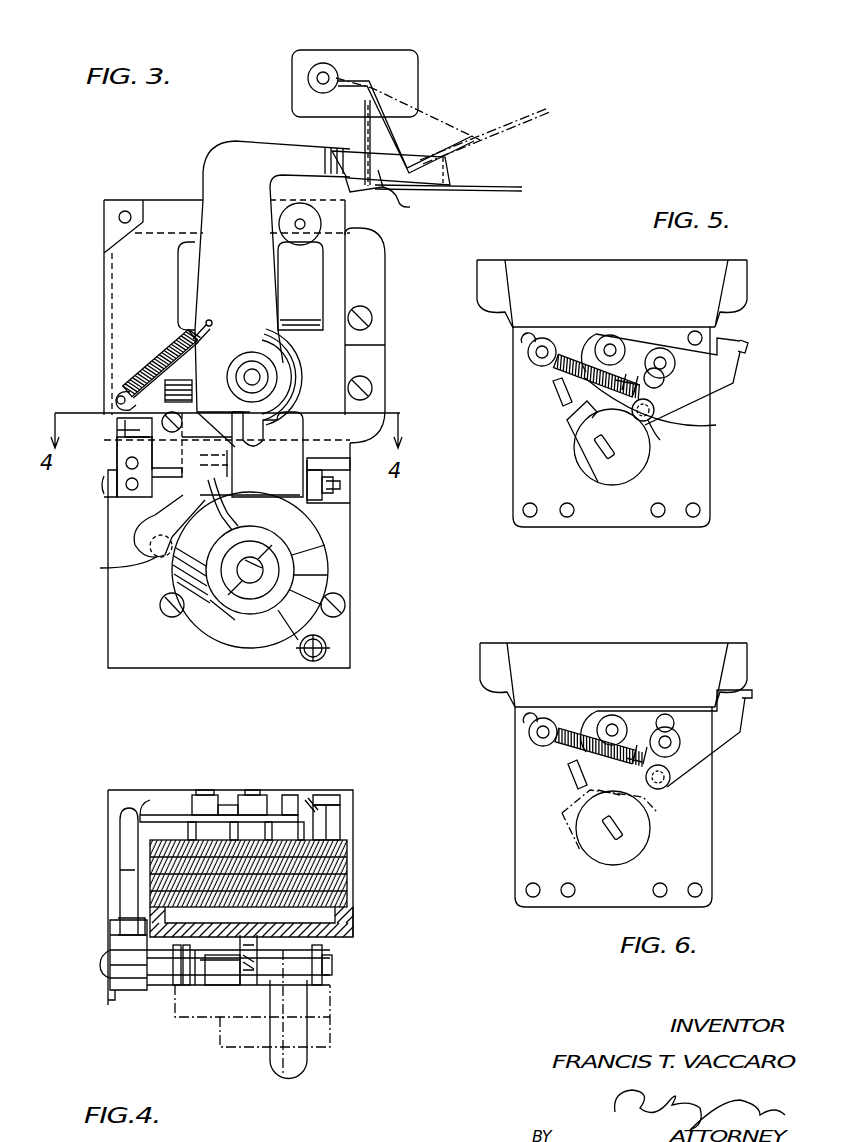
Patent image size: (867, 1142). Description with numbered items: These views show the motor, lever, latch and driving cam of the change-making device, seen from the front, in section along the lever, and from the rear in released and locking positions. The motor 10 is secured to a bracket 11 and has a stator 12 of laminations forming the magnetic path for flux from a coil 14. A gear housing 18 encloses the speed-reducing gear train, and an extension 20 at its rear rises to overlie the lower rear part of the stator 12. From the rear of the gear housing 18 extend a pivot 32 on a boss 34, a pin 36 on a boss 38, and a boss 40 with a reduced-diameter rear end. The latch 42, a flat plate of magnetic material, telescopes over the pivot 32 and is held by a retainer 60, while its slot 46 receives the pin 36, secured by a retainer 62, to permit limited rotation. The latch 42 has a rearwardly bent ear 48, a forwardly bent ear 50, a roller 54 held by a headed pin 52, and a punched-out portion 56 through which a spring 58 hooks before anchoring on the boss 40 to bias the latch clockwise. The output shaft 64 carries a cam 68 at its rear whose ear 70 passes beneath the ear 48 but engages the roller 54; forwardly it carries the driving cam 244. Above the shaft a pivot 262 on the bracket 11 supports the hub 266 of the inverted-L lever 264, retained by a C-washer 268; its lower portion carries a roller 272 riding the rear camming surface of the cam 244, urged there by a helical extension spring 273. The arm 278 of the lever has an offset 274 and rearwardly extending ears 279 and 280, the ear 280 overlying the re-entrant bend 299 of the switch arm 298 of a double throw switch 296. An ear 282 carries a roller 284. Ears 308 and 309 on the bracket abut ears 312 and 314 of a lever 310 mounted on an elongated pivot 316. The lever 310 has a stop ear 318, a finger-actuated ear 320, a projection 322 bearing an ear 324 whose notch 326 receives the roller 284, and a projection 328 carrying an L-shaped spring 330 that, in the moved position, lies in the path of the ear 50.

In FIG. 3, the motor 10 is at (422, 354).
In FIG. 5, the motor 10 is at (623, 262).
In FIG. 6, the motor 10 is at (638, 650).
In FIG. 4, the motor 10 is at (345, 912).
In FIG. 3, the bracket 11 is at (340, 226).
In FIG. 4, the bracket 11 is at (340, 938).
In FIG. 3, the stator 12 is at (385, 305).
In FIG. 5, the stator 12 is at (745, 262).
In FIG. 6, the stator 12 is at (748, 648).
In FIG. 4, the stator 12 is at (335, 862).
In FIG. 3, the coil 14 is at (308, 281).
In FIG. 5, the gear housing 18 is at (710, 470).
In FIG. 6, the gear housing 18 is at (712, 838).
In FIG. 5, the extension 20 is at (550, 289).
In FIG. 6, the extension 20 is at (550, 676).
In FIG. 5, the pivot 32 is at (614, 342).
In FIG. 6, the pivot 32 is at (650, 700).
In FIG. 4, the pivot 32 is at (262, 795).
In FIG. 4, the boss 34 is at (272, 831).
In FIG. 5, the pin 36 is at (672, 366).
In FIG. 6, the pin 36 is at (676, 735).
In FIG. 4, the pin 36 is at (190, 797).
In FIG. 4, the boss 38 is at (188, 831).
In FIG. 4, the boss 40 is at (340, 826).
In FIG. 5, the latch 42 is at (728, 388).
In FIG. 6, the latch 42 is at (722, 755).
In FIG. 4, the latch 42 is at (148, 812).
In FIG. 5, the slot 46 is at (665, 409).
In FIG. 6, the slot 46 is at (667, 713).
In FIG. 5, the ear 48 is at (552, 394).
In FIG. 6, the ear 48 is at (566, 783).
In FIG. 4, the ear 48 is at (312, 782).
In FIG. 3, the ear 50 is at (110, 455).
In FIG. 5, the ear 50 is at (747, 348).
In FIG. 6, the ear 50 is at (753, 693).
In FIG. 4, the ear 50 is at (120, 870).
In FIG. 5, the headed pin 52 is at (658, 430).
In FIG. 6, the headed pin 52 is at (666, 785).
In FIG. 4, the headed pin 52 is at (202, 790).
In FIG. 4, the roller 54 is at (222, 800).
In FIG. 5, the punched-out portion 56 is at (640, 372).
In FIG. 6, the punched-out portion 56 is at (630, 770).
In FIG. 4, the punched-out portion 56 is at (230, 800).
In FIG. 5, the spring 58 is at (556, 370).
In FIG. 6, the spring 58 is at (560, 755).
In FIG. 4, the spring 58 is at (312, 810).
In FIG. 5, the retainer 60 is at (612, 344).
In FIG. 6, the retainer 60 is at (610, 716).
In FIG. 4, the retainer 60 is at (270, 773).
In FIG. 5, the retainer 62 is at (664, 386).
In FIG. 6, the retainer 62 is at (680, 742).
In FIG. 4, the retainer 62 is at (193, 812).
In FIG. 3, the output shaft 64 is at (255, 560).
In FIG. 5, the output shaft 64 is at (600, 480).
In FIG. 6, the output shaft 64 is at (605, 865).
In FIG. 5, the cam 68 is at (637, 468).
In FIG. 6, the cam 68 is at (642, 847).
In FIG. 4, the cam 68 is at (272, 795).
In FIG. 5, the ear 70 is at (568, 420).
In FIG. 6, the ear 70 is at (655, 806).
In FIG. 3, the driving cam 244 is at (205, 630).
In FIG. 4, the driving cam 244 is at (393, 1049).
In FIG. 3, the pivot 262 is at (261, 379).
In FIG. 3, the lever 264 is at (256, 296).
In FIG. 4, the lever 264 is at (212, 960).
In FIG. 3, the hub 266 is at (272, 346).
In FIG. 3, the C-washer 268 is at (262, 371).
In FIG. 3, the roller 272 is at (100, 568).
In FIG. 3, the helical extension spring 273 is at (165, 338).
In FIG. 3, the offset 274 is at (323, 160).
In FIG. 3, the arm 278 is at (283, 142).
In FIG. 3, the ear 279 is at (398, 197).
In FIG. 3, the ear 280 is at (420, 142).
In FIG. 3, the ear 282 is at (188, 360).
In FIG. 3, the roller 284 is at (116, 394).
In FIG. 4, the roller 284 is at (162, 960).
In FIG. 3, the double throw switch 296 is at (414, 56).
In FIG. 3, the switch arm 298 is at (550, 110).
In FIG. 3, the re-entrant bend 299 is at (368, 150).
In FIG. 3, the ear 308 is at (110, 497).
In FIG. 4, the ear 308 is at (112, 975).
In FIG. 3, the ear 309 is at (338, 486).
In FIG. 4, the ear 309 is at (328, 985).
In FIG. 3, the lever 310 is at (213, 509).
In FIG. 4, the lever 310 is at (152, 1000).
In FIG. 3, the ear 312 is at (110, 478).
In FIG. 4, the ear 312 is at (120, 985).
In FIG. 3, the ear 314 is at (340, 463).
In FIG. 4, the ear 314 is at (322, 960).
In FIG. 3, the elongated pivot 316 is at (330, 482).
In FIG. 4, the elongated pivot 316 is at (102, 966).
In FIG. 3, the ear 318 is at (246, 455).
In FIG. 4, the ear 318 is at (246, 935).
In FIG. 3, the ear 320 is at (297, 420).
In FIG. 4, the ear 320 is at (290, 1072).
In FIG. 3, the projection 322 is at (224, 479).
In FIG. 4, the projection 322 is at (212, 990).
In FIG. 3, the ear 324 is at (183, 418).
In FIG. 4, the ear 324 is at (177, 990).
In FIG. 4, the notch 326 is at (197, 990).
In FIG. 3, the projection 328 is at (130, 446).
In FIG. 3, the spring 330 is at (118, 428).
In FIG. 4, the spring 330 is at (128, 920).